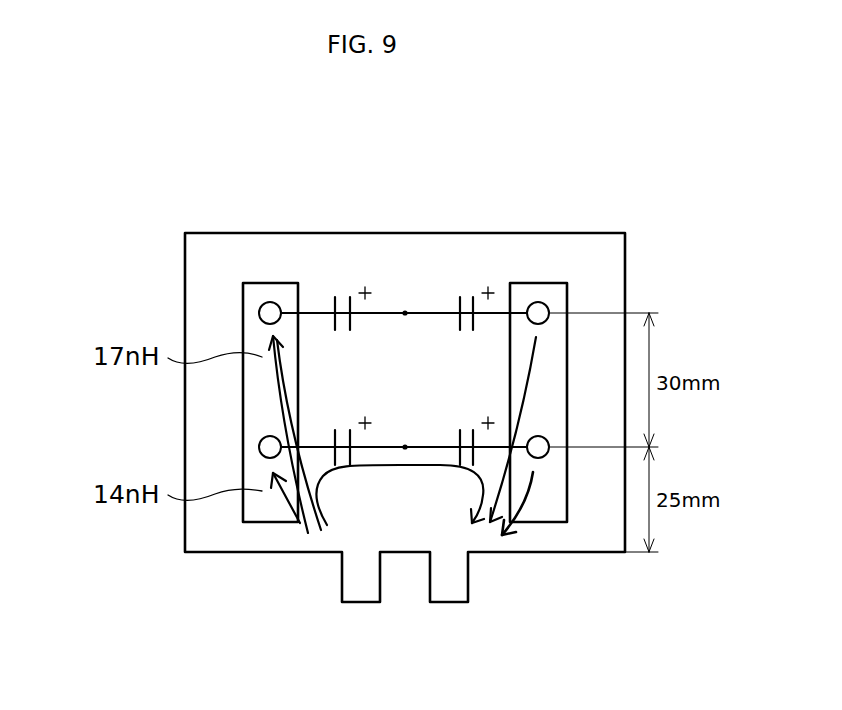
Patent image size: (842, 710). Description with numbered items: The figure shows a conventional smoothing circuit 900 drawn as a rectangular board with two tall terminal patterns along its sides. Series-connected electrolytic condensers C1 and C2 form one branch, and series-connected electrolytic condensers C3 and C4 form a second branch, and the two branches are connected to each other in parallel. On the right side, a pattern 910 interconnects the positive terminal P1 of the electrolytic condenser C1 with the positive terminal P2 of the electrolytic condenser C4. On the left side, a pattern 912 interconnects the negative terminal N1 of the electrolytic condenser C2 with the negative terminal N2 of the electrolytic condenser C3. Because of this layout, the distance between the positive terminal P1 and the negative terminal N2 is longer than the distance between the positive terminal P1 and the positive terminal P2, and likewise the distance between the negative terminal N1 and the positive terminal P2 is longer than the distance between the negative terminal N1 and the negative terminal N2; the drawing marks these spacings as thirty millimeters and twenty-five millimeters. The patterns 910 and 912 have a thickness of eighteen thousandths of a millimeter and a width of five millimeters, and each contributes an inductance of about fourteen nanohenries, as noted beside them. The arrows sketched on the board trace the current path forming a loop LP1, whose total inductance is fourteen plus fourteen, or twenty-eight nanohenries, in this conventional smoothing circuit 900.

The smoothing circuit 900 is at (623, 191).
The pattern 910 is at (532, 283).
The pattern 912 is at (275, 283).
The negative terminal N1 is at (270, 302).
The negative terminal N2 is at (270, 436).
The positive terminal P1 is at (540, 302).
The positive terminal P2 is at (540, 436).
The electrolytic condenser C1 is at (469, 293).
The electrolytic condenser C2 is at (346, 293).
The electrolytic condenser C3 is at (346, 428).
The electrolytic condenser C4 is at (469, 428).
The loop LP1 is at (403, 468).